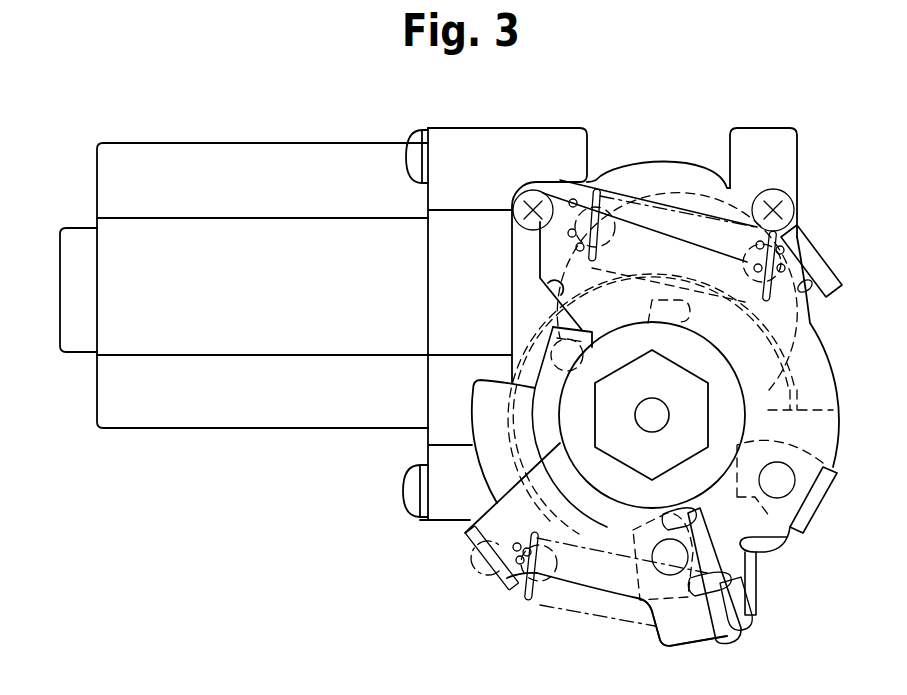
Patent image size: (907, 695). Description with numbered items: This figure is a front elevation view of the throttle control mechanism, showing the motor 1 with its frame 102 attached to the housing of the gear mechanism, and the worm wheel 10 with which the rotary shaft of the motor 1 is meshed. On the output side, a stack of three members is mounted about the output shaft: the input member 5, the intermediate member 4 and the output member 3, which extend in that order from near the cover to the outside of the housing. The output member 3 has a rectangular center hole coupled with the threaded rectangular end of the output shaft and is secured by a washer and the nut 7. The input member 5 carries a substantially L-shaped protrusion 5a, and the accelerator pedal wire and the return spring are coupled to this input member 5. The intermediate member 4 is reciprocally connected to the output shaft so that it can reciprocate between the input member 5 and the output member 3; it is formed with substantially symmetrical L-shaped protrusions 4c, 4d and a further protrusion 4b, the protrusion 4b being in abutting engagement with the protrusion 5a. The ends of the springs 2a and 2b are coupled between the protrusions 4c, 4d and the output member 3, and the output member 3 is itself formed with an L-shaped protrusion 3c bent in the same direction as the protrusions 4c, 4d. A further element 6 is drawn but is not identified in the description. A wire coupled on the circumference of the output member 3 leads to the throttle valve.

The motor 1 is at (226, 141).
The frame 102 is at (298, 158).
The spring 2a is at (620, 178).
The spring 2b is at (522, 594).
The output member 3 is at (818, 435).
The protrusion 3c is at (548, 253).
The intermediate member 4 is at (500, 520).
The protrusion 4b is at (690, 623).
The protrusion 4c is at (485, 580).
The protrusion 4d is at (828, 292).
The input member 5 is at (487, 420).
The protrusion 5a is at (730, 627).
The lever 6 is at (735, 640).
The nut 7 is at (700, 398).
The worm wheel 10 is at (767, 140).